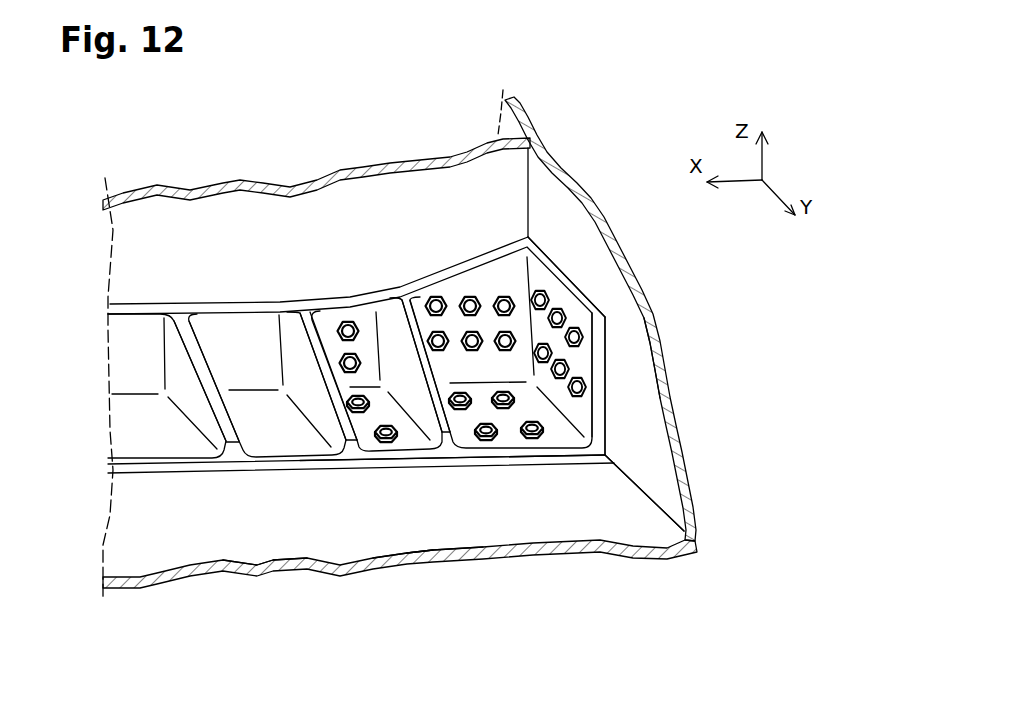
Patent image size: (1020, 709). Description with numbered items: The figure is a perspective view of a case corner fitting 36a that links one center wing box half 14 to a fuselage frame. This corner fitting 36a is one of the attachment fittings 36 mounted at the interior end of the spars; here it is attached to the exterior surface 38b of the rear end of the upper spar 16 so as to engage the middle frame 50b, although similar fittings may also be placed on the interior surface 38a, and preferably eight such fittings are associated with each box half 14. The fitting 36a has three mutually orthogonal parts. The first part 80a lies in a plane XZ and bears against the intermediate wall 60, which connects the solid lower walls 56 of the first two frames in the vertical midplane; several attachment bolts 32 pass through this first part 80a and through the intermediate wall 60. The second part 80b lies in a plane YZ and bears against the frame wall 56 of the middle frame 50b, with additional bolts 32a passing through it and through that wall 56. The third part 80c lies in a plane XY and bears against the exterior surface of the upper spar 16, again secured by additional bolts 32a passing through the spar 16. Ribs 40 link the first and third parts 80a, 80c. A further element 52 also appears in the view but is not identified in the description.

The center wing box half 14 is at (178, 531).
The upper spar 16 is at (255, 527).
The attachment bolts 32 is at (362, 356).
The additional bolts 32a is at (590, 392).
The attachment fittings 36 is at (143, 424).
The corner fitting 36a is at (537, 483).
The interior surface 38a is at (418, 567).
The exterior surface 38b is at (428, 552).
The ribs 40 is at (191, 357).
The second fuselage frame 50b is at (661, 287).
The wall portion 52 is at (493, 203).
The frame wall 56 is at (624, 331).
The intermediate wall 60 is at (152, 234).
The first part 80a is at (510, 272).
The second part 80b is at (577, 274).
The third part 80c is at (557, 458).